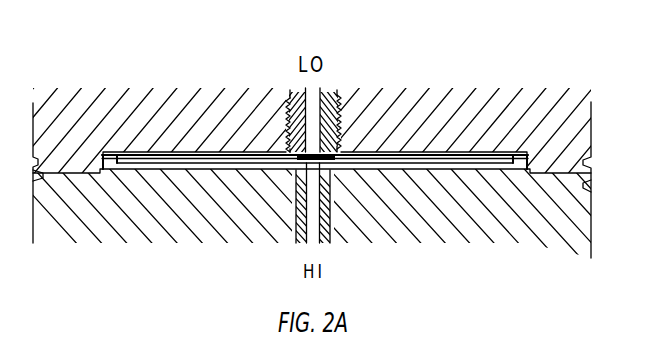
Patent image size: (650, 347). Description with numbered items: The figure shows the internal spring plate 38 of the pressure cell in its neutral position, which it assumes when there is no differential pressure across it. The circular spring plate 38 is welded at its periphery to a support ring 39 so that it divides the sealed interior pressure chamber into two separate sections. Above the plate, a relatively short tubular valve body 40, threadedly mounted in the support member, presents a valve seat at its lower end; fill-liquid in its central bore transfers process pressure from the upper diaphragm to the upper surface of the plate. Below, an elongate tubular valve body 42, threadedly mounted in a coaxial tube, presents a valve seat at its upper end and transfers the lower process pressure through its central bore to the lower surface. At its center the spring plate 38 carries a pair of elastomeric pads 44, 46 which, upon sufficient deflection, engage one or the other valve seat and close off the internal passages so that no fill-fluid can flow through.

The spring plate 38 is at (423, 170).
The support ring 39 is at (107, 173).
The tubular valve body 40 is at (327, 103).
The elongate tubular valve body 42 is at (328, 238).
The upper elastomeric pad 44 is at (333, 151).
The lower elastomeric pad 46 is at (333, 172).